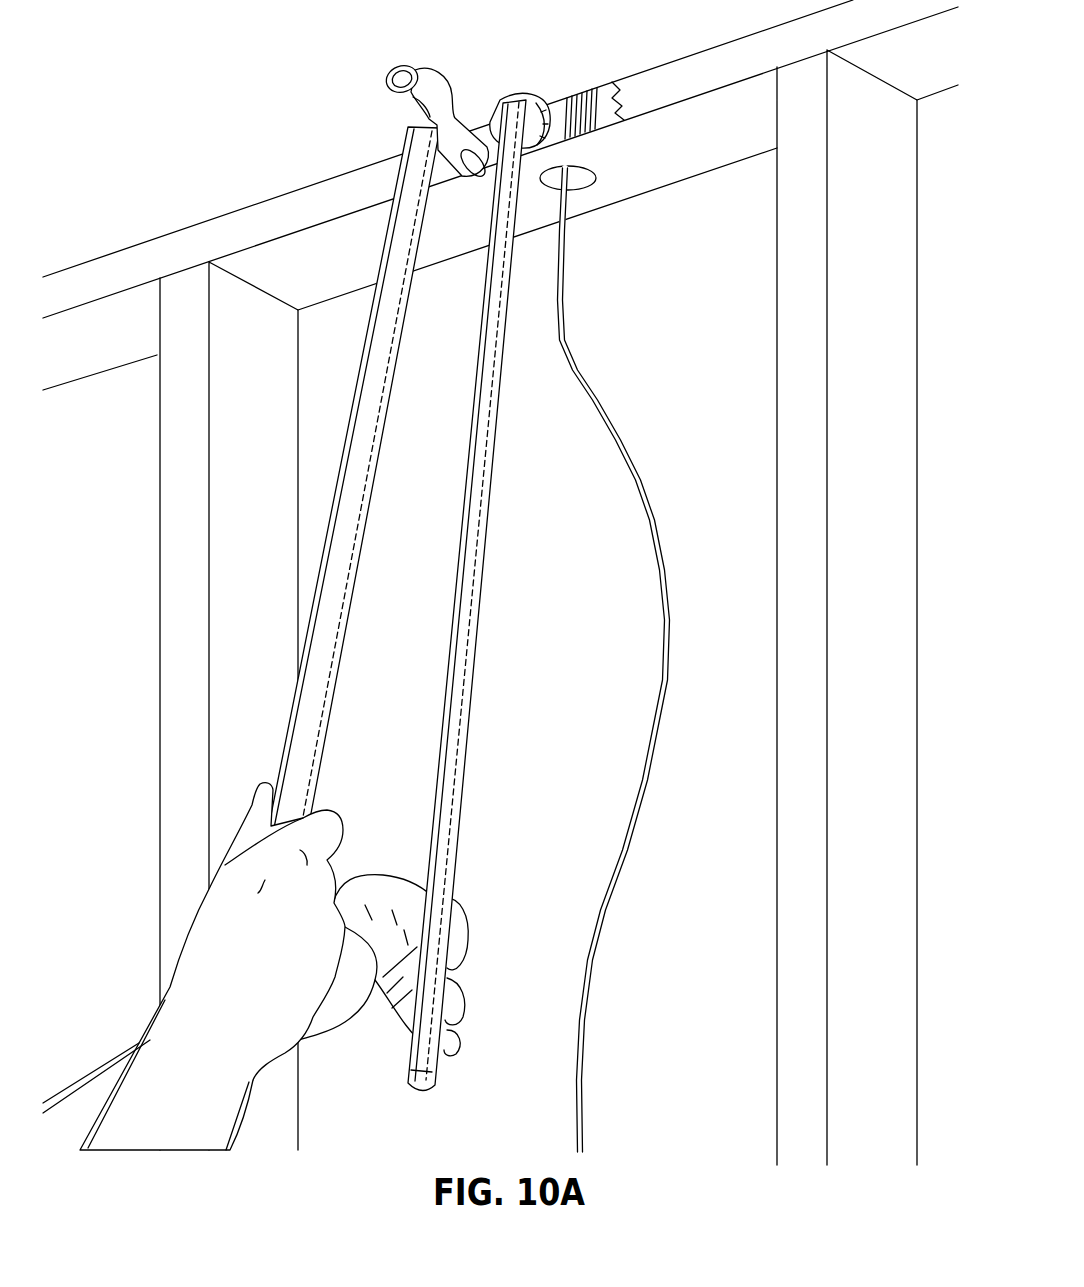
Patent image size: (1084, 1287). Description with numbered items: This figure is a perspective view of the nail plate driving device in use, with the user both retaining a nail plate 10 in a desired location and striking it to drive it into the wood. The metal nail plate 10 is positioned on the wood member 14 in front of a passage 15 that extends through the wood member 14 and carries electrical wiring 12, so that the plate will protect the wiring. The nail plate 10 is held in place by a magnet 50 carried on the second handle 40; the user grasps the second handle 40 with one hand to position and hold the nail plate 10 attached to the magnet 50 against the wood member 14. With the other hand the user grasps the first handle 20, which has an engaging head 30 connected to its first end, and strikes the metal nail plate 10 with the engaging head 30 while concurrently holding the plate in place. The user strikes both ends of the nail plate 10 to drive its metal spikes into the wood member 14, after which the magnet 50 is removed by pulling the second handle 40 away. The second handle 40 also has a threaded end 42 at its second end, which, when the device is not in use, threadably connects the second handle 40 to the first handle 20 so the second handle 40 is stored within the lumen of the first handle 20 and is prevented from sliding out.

The nail plate 10 is at (607, 97).
The electrical wiring 12 is at (569, 288).
The wood member 14 is at (673, 77).
The passage 15 is at (601, 186).
The first handle 20 is at (382, 453).
The engaging head 30 is at (475, 108).
The second handle 40 is at (497, 417).
The threaded end 42 is at (420, 1092).
The magnet 50 is at (523, 100).